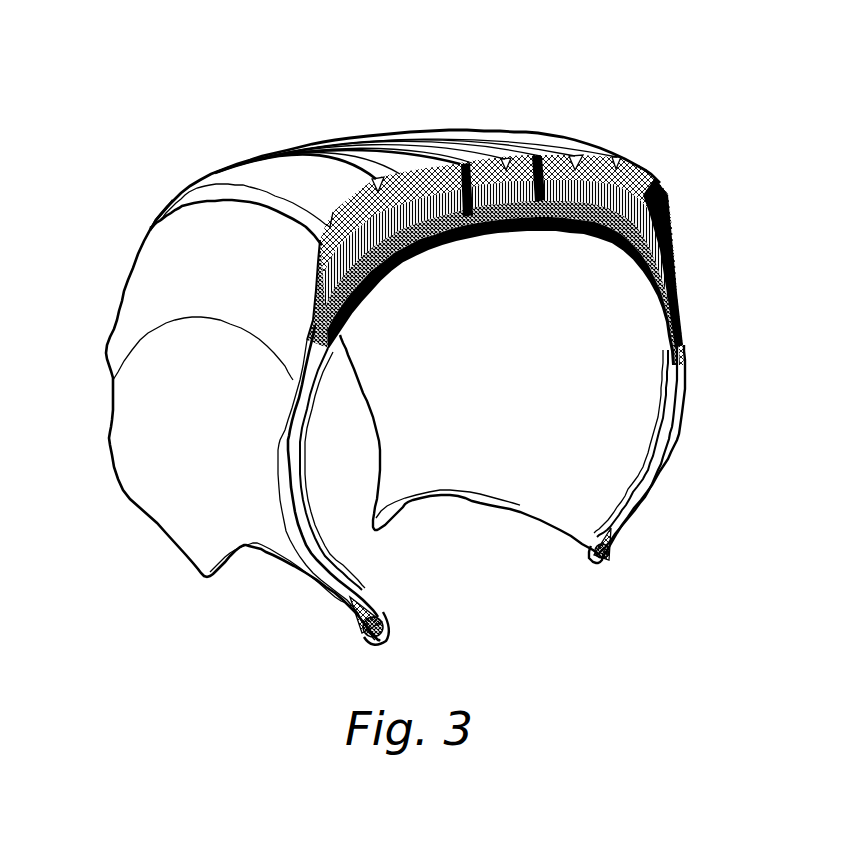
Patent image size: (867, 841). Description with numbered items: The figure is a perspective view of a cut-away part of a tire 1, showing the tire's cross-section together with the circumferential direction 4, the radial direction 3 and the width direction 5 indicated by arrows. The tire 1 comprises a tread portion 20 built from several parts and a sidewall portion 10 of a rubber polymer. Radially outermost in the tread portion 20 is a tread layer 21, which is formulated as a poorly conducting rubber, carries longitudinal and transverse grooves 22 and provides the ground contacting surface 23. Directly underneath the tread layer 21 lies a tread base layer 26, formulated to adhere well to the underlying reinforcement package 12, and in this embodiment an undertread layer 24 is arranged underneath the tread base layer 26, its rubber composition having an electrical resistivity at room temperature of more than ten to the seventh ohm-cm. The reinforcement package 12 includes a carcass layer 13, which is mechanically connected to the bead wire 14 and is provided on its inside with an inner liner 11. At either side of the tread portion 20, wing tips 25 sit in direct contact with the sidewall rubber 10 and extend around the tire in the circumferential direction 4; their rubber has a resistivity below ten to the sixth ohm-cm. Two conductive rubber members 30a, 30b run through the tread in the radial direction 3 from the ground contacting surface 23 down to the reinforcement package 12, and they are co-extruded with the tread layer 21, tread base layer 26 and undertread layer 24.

The tire 1 is at (130, 120).
The radial direction 3 is at (502, 272).
The circumferential direction 4 is at (582, 303).
The width direction 5 is at (372, 43).
The sidewall portion 10 is at (278, 457).
The inner liner 11 is at (300, 465).
The reinforcement package 12 is at (390, 280).
The carcass layer 13 is at (287, 490).
The bead wire 14 is at (387, 637).
The tread portion 20 is at (158, 275).
The tread layer 21 is at (345, 200).
The grooves 22 is at (377, 180).
The ground contacting surface 23 is at (450, 153).
The undertread layer 24 is at (618, 159).
The wing tip 25 is at (673, 224).
The tread base layer 26 is at (578, 158).
The rubber member 30a is at (400, 145).
The rubber member 30b is at (490, 130).